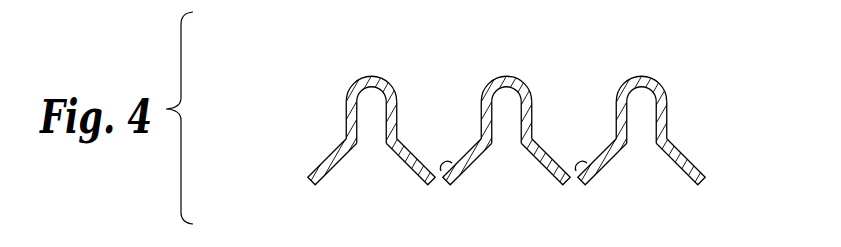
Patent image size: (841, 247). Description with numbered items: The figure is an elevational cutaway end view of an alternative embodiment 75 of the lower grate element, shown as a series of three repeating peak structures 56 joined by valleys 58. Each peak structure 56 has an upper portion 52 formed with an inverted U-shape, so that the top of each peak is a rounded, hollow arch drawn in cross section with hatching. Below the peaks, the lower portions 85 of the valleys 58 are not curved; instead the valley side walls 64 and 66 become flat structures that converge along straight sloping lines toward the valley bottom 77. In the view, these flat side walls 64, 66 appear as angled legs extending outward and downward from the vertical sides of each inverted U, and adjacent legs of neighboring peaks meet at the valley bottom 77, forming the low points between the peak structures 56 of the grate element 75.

The alternative embodiment of the lower grate element 75 is at (312, 147).
The peak structure 56 is at (352, 84).
The upper portion 52 is at (346, 100).
The valley side wall 66 is at (413, 155).
The valley 58 is at (437, 183).
The lower portion of the valley 85 is at (458, 175).
The valley bottom 77 is at (578, 178).
The valley side wall 64 is at (593, 173).